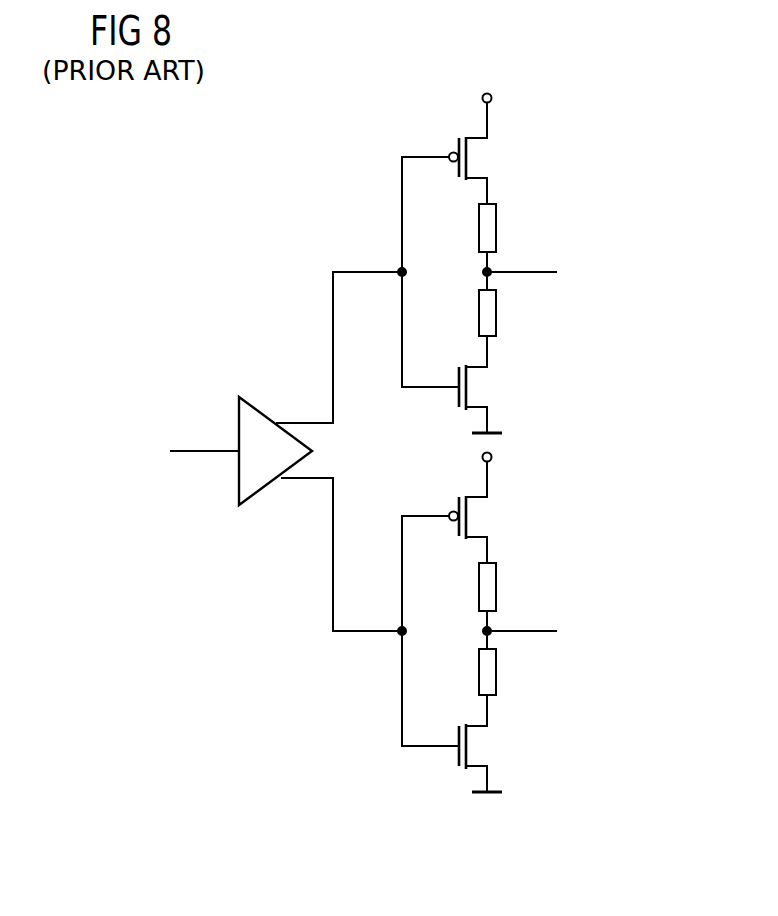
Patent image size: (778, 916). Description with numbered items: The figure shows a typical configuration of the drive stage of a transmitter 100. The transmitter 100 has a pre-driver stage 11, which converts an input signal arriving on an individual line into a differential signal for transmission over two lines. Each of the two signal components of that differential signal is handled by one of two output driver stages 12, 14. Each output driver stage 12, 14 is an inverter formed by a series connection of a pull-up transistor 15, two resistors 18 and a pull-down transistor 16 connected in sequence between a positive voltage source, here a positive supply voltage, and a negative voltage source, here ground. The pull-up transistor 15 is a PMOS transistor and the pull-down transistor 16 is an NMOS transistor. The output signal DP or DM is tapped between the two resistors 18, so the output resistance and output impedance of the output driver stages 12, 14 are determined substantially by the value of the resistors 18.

The transmitter 100 is at (323, 203).
The pre-driver stage 11 is at (256, 407).
The output driver stage 12 is at (392, 123).
The output driver stage 14 is at (377, 757).
The pull-up transistor 15 is at (477, 156).
The pull-down transistor 16 is at (476, 385).
The resistors 18 is at (496, 226).